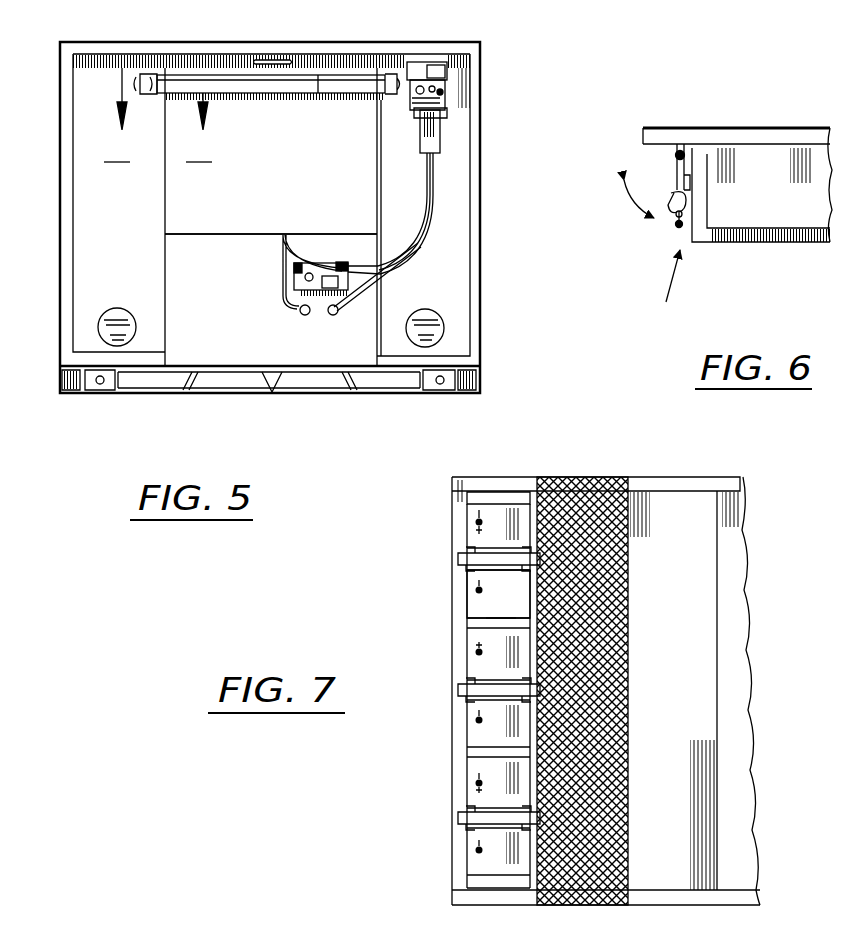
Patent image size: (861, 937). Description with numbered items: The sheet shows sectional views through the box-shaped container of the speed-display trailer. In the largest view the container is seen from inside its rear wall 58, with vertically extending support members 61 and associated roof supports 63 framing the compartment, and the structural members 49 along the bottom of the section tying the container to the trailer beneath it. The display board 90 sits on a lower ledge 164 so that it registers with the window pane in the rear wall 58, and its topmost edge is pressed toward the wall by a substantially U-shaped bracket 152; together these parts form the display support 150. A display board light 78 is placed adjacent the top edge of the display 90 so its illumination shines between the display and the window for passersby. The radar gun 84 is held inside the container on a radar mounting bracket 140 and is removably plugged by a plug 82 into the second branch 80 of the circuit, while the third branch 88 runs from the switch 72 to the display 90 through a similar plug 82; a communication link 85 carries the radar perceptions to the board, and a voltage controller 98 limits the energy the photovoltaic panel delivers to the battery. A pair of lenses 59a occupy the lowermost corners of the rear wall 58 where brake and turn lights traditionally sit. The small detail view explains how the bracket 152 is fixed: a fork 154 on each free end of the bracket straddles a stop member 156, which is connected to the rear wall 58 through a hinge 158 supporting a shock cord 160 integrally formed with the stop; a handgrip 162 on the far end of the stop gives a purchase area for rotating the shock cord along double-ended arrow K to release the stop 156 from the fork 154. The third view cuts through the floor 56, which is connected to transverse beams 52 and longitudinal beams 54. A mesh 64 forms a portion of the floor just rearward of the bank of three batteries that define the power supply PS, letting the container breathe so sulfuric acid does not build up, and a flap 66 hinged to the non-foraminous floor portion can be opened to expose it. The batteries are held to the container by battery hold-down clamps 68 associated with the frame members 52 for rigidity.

In FIG. 5, the roof supports 63 is at (97, 50).
In FIG. 5, the vertically extending support members 61 is at (67, 166).
In FIG. 5, the display board 90 is at (280, 164).
In FIG. 6, the display board 90 is at (782, 196).
In FIG. 5, the lower ledge 164 is at (252, 233).
In FIG. 5, the display board light 78 is at (285, 60).
In FIG. 5, the U-shaped bracket 152 is at (320, 85).
In FIG. 6, the U-shaped bracket 152 is at (800, 246).
In FIG. 5, the display support 150 is at (147, 112).
In FIG. 6, the display support 150 is at (650, 283).
In FIG. 5, the radar gun 84 is at (447, 68).
In FIG. 5, the radar mounting bracket 140 is at (455, 118).
In FIG. 5, the second branch 80 is at (428, 176).
In FIG. 5, the communication link 85 is at (412, 252).
In FIG. 5, the switch 72 is at (383, 296).
In FIG. 5, the third branch 88 is at (293, 280).
In FIG. 5, the voltage controller 98 is at (327, 270).
In FIG. 5, the plug 82 is at (305, 316).
In FIG. 5, the lenses 59a is at (112, 322).
In FIG. 5, the braces 49 is at (173, 382).
In FIG. 6, the walls 58 is at (675, 126).
In FIG. 7, the walls 58 is at (465, 600).
In FIG. 6, the hinge 158 is at (683, 148).
In FIG. 6, the shock cord 160 is at (686, 186).
In FIG. 6, the stop member 156 is at (668, 210).
In FIG. 6, the fork 154 is at (711, 232).
In FIG. 6, the handgrip 162 is at (682, 230).
In FIG. 6, the double-ended arrow K is at (630, 202).
In FIG. 7, the floor 56 is at (745, 706).
In FIG. 7, the longitudinal beams 54 is at (652, 485).
In FIG. 7, the mesh 64 is at (573, 482).
In FIG. 7, the flap 66 is at (685, 746).
In FIG. 7, the transverse beams 52 is at (465, 734).
In FIG. 7, the battery hold-down clamps 68 is at (502, 553).
In FIG. 7, the power supply PS is at (498, 594).